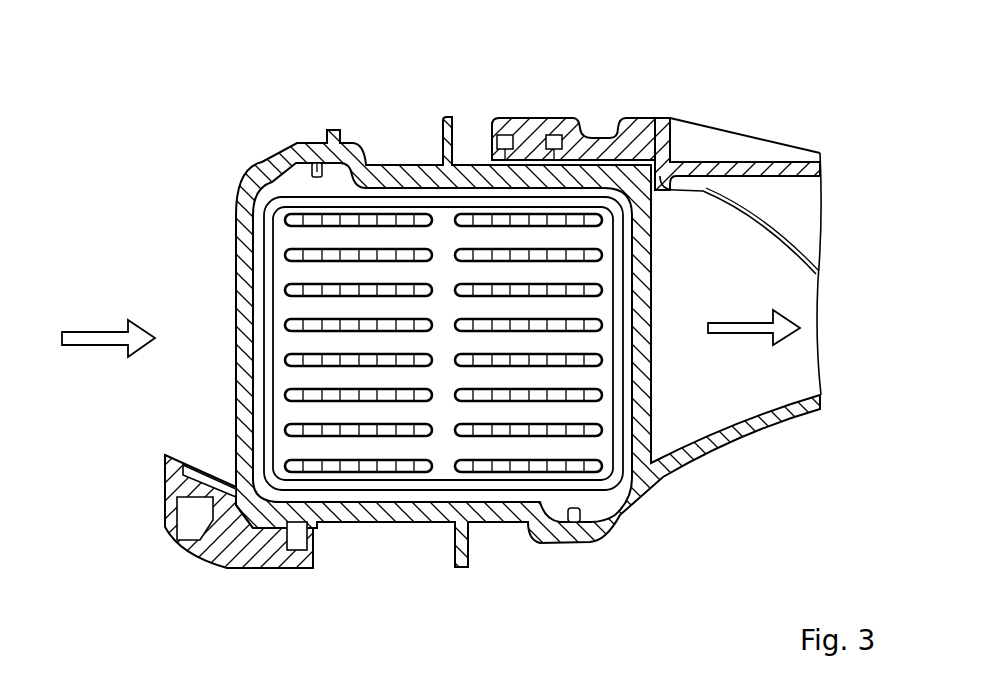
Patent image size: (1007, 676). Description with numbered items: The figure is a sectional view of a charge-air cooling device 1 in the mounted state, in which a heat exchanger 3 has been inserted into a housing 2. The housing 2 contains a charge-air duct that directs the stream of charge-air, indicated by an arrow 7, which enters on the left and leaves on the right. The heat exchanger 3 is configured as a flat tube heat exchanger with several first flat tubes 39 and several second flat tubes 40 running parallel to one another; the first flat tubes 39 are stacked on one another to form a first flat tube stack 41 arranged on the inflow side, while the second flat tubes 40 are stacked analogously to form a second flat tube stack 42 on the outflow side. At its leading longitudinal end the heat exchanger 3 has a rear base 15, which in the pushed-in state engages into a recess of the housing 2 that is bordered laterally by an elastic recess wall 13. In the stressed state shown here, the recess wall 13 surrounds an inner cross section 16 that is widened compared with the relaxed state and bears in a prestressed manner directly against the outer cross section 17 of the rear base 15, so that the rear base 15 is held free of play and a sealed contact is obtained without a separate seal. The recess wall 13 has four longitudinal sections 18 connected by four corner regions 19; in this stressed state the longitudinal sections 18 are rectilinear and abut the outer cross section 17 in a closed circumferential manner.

The charge-air cooling device 1 is at (216, 125).
The housing 2 is at (690, 492).
The heat exchanger 3 is at (439, 475).
The arrow 7 is at (85, 335).
The recess wall 13 is at (300, 135).
The rear base 15 is at (627, 265).
The inner cross section 16 is at (258, 310).
The outer cross section 17 is at (243, 338).
The longitudinal sections 18 is at (398, 165).
The corner regions 19 is at (248, 193).
The first flat tubes 39 is at (283, 432).
The second flat tubes 40 is at (603, 396).
The first flat tube stack 41 is at (353, 545).
The second flat tube stack 42 is at (511, 545).